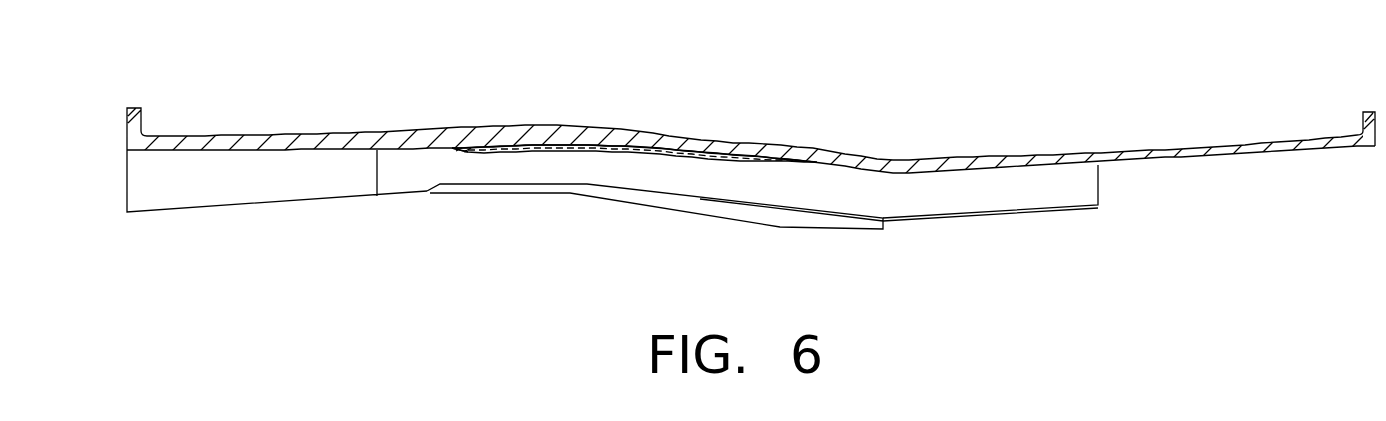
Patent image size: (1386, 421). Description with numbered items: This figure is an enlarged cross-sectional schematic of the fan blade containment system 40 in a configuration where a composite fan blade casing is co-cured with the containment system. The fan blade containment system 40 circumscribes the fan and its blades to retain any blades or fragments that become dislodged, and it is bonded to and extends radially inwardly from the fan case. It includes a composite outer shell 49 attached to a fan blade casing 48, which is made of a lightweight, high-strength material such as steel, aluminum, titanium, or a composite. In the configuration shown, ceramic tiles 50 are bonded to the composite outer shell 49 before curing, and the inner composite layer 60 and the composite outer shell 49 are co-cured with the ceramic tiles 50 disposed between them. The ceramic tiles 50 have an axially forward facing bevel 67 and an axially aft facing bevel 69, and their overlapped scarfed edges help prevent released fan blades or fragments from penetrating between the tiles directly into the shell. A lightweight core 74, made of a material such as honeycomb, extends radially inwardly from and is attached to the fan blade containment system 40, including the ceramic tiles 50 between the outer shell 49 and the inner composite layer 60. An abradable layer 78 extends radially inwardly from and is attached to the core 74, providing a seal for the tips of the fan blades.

The fan blade containment system 40 is at (706, 141).
The fan blade casing 48 is at (226, 136).
The composite outer shell 49 is at (598, 129).
The ceramic tiles 50 is at (605, 139).
The inner composite layer 60 is at (717, 158).
The axially forward facing bevel 67 is at (432, 119).
The axially aft facing bevel 69 is at (817, 158).
The lightweight core 74 is at (1015, 185).
The abradable layer 78 is at (700, 205).